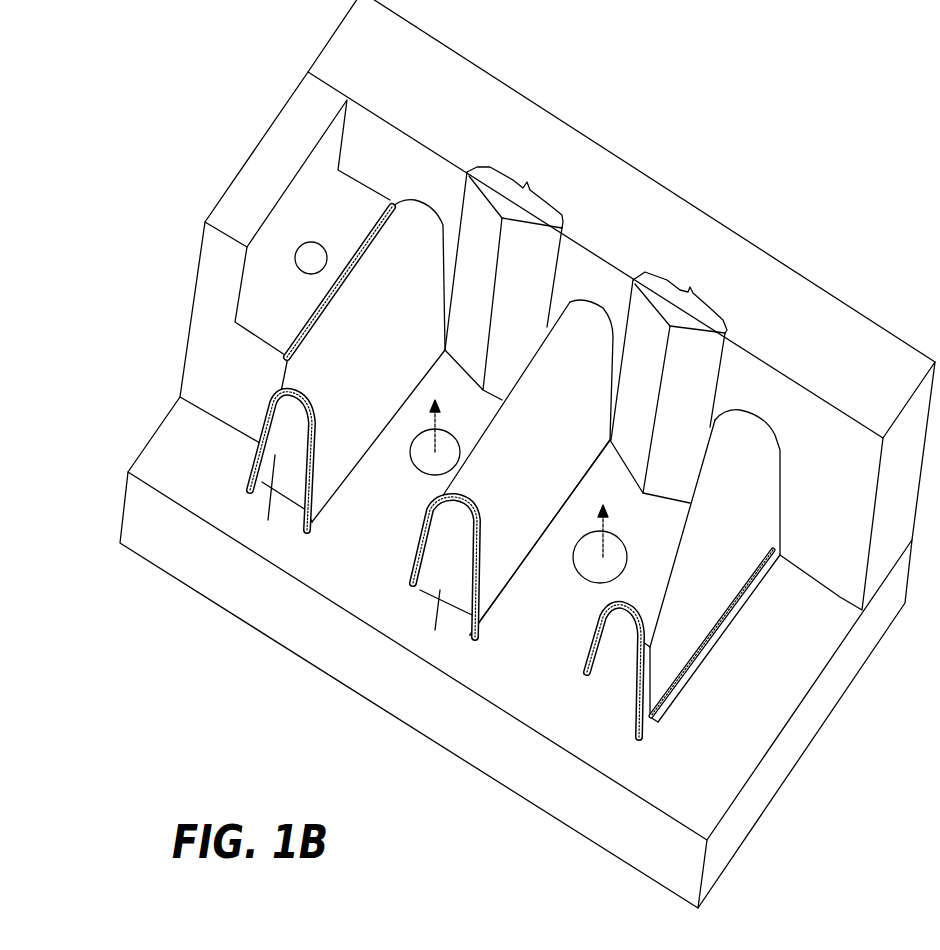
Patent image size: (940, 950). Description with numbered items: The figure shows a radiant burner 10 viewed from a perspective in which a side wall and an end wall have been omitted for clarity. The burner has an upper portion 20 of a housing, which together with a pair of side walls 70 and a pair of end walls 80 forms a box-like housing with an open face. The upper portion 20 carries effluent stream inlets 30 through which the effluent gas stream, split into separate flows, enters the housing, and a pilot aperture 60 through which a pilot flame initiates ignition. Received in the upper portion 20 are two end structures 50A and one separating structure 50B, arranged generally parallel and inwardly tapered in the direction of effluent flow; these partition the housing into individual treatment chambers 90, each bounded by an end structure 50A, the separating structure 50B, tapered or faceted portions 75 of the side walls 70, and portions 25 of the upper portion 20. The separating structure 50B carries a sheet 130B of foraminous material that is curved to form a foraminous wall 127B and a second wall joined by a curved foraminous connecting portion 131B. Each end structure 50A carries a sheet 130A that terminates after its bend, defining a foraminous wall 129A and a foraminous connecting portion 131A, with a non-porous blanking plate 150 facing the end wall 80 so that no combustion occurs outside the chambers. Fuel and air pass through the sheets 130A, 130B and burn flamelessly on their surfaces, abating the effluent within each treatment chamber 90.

The radiant burner 10 is at (242, 70).
The upper portion 20 is at (603, 837).
The portions of the upper portion 25 is at (263, 567).
The effluent stream inlets 30 is at (462, 432).
The end structures 50A is at (273, 497).
The separating structure 50B is at (440, 600).
The pilot aperture 60 is at (314, 259).
The side walls 70 is at (645, 190).
The portions of the side walls 75 is at (518, 192).
The end walls 80 is at (235, 200).
The treatment chambers 90 is at (381, 528).
The foraminous wall 127B is at (504, 562).
The foraminous wall 129A is at (372, 398).
The sheet of foraminous material 130A is at (372, 430).
The sheet of foraminous material 130B is at (537, 538).
The foraminous connecting portion 131A is at (396, 220).
The curved foraminous connecting portion 131B is at (583, 344).
The non-porous blanking plate 150 is at (688, 637).